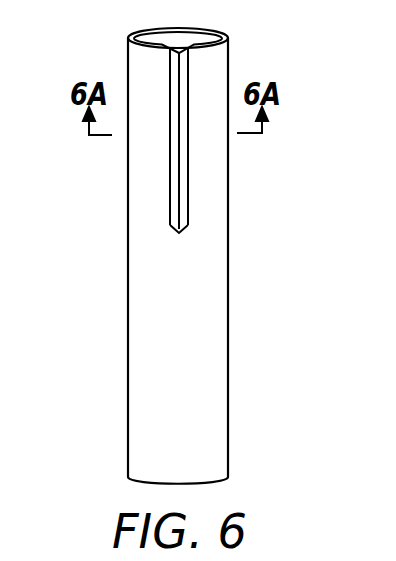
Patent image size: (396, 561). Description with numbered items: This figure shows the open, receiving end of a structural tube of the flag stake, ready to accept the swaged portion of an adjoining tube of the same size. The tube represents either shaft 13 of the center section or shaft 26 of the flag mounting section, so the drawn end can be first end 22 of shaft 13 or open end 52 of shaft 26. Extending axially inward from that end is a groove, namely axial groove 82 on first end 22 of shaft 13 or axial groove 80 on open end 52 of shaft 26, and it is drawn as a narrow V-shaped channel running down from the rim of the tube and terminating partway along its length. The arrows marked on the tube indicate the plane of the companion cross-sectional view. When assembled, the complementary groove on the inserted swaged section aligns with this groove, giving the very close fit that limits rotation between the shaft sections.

The shaft 13 is at (128, 256).
The shaft 26 is at (128, 256).
The first end 22 is at (128, 256).
The open end 52 is at (152, 190).
The axial groove 82 is at (254, 137).
The axial groove 80 is at (183, 97).